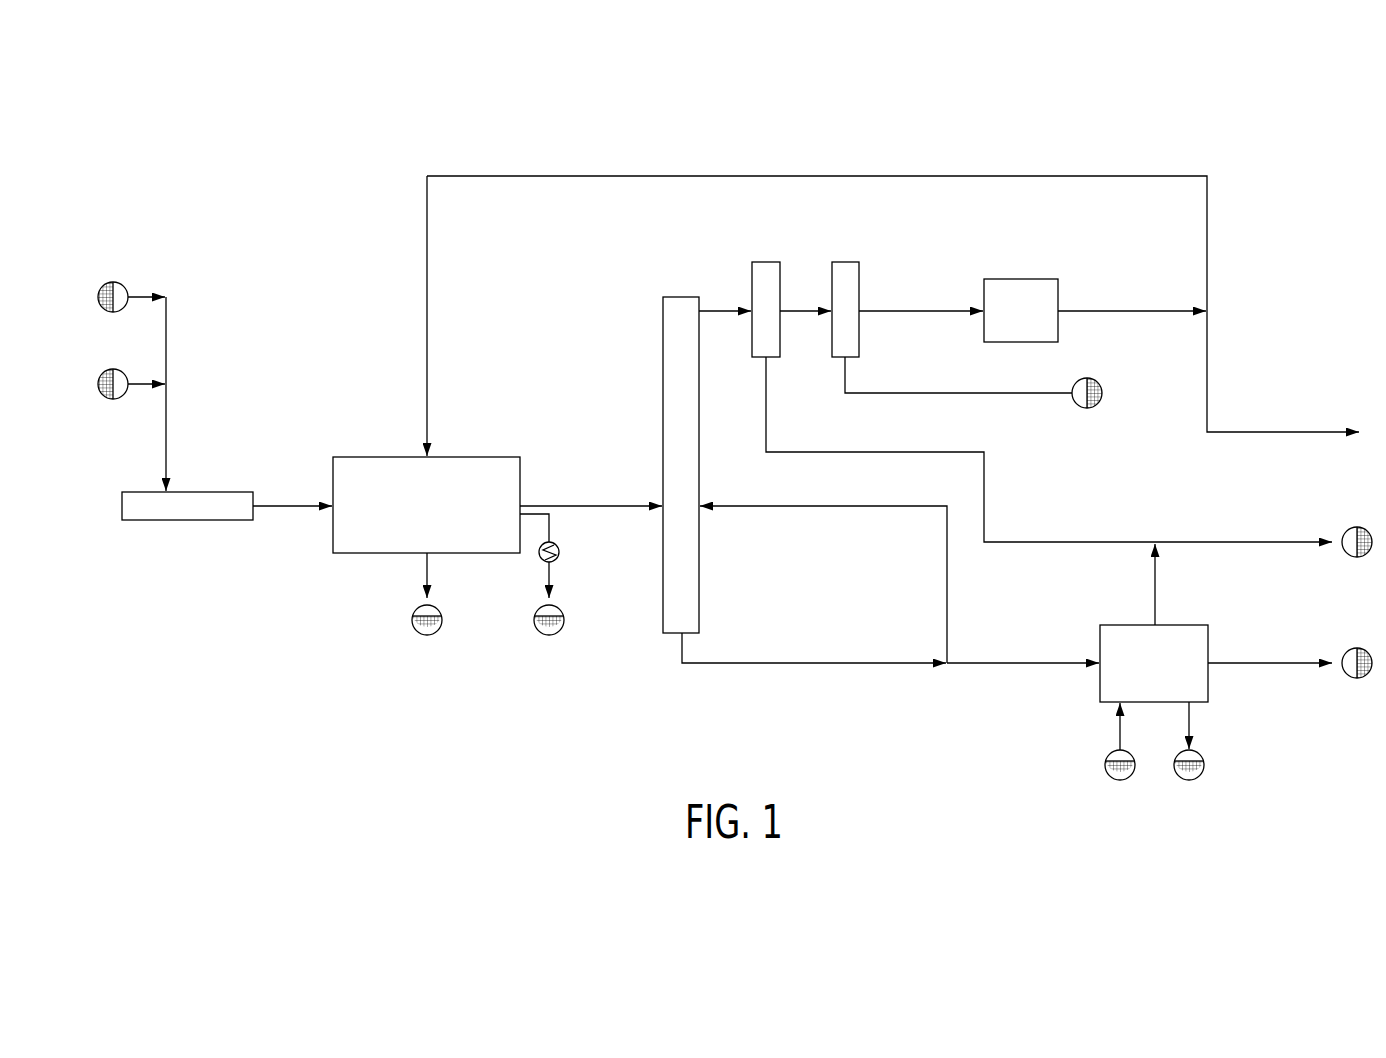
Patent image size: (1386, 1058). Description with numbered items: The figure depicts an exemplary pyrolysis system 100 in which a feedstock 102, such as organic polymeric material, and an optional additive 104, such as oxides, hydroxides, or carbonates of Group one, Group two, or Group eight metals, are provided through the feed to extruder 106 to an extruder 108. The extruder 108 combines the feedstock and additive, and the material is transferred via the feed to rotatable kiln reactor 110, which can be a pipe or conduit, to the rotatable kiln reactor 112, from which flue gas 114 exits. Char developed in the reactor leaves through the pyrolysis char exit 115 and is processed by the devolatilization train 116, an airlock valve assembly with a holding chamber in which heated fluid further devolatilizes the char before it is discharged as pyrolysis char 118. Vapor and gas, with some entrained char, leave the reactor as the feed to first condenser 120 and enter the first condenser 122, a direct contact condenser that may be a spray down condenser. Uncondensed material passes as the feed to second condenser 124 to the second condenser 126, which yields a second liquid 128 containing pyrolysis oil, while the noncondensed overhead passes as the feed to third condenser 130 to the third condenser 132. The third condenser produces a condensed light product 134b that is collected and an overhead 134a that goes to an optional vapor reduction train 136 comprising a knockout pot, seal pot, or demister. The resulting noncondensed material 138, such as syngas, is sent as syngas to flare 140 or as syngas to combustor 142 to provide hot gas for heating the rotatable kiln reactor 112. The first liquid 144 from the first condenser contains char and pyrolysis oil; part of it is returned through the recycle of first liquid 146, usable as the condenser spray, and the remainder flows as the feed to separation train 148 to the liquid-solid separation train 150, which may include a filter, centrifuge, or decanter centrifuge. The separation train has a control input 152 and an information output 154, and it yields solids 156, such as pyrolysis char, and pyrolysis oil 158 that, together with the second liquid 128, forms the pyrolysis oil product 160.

The system 100 is at (358, 214).
The feedstock 102 is at (132, 294).
The additive 104 is at (130, 393).
The feed to extruder 106 is at (168, 418).
The extruder 108 is at (187, 522).
The feed to rotatable kiln reactor 110 is at (280, 505).
The rotatable kiln reactor 112 is at (370, 555).
The flue gas exiting rotatable kiln reactor 114 is at (432, 565).
The pyrolysis char exit 115 is at (553, 520).
The devolatilization train 116 is at (560, 552).
The pyrolysis char 118 is at (553, 580).
The feed to first condenser 120 is at (582, 500).
The first condenser 122 is at (663, 377).
The feed to second condenser 124 is at (705, 307).
The second condenser 126 is at (765, 258).
The second liquid 128 is at (767, 415).
The feed to third condenser 130 is at (787, 307).
The third condenser 132 is at (847, 258).
The overhead from third condenser 134a is at (907, 307).
The condensate from third condenser 134b is at (930, 390).
The vapor reduction train 136 is at (1022, 277).
The noncondensed material 138 is at (1122, 307).
The syngas to flare 140 is at (1210, 370).
The syngas to combustor 142 is at (823, 175).
The first liquid 144 is at (818, 665).
The recycle of first liquid from first condenser 146 is at (817, 508).
The feed to separation train 148 is at (962, 660).
The liquid-solid separation train 150 is at (1100, 627).
The control input to separation train 152 is at (1120, 722).
The information output from separation train 154 is at (1193, 727).
The solids from separation train 156 is at (1267, 660).
The pyrolysis oil from separator train 158 is at (1157, 583).
The pyrolysis oil product 160 is at (1262, 540).